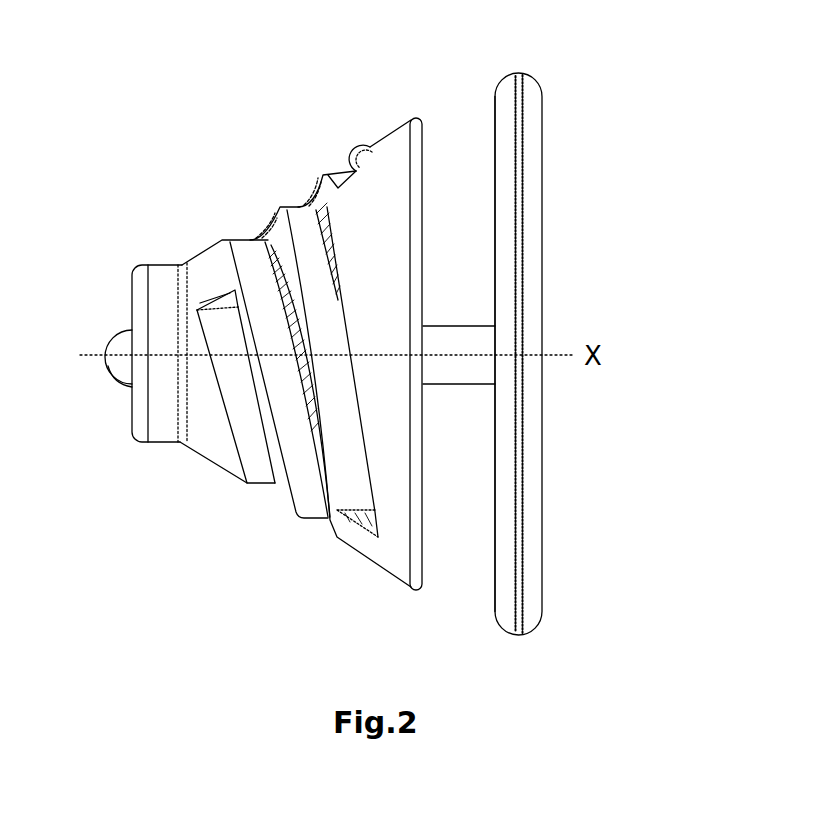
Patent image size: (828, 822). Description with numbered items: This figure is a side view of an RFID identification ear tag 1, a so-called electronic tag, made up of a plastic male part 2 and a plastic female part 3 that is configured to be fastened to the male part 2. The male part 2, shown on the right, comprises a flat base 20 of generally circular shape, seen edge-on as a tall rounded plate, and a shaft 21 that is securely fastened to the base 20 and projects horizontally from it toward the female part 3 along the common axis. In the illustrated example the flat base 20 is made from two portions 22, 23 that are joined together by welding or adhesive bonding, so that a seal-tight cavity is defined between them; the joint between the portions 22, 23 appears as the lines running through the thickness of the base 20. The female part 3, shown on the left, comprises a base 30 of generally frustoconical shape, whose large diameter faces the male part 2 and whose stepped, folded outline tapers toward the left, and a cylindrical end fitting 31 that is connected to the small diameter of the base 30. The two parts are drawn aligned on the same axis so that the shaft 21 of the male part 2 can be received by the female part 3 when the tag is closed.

The RFID identification ear tag 1 is at (300, 92).
The male part 2 is at (584, 133).
The flat base 20 is at (496, 607).
The shaft 21 is at (455, 372).
The first portion of the flat base 22 is at (493, 108).
The second portion of the flat base 23 is at (535, 187).
The female part 3 is at (256, 174).
The base of the female part 30 is at (313, 507).
The cylindrical end fitting 31 is at (160, 283).